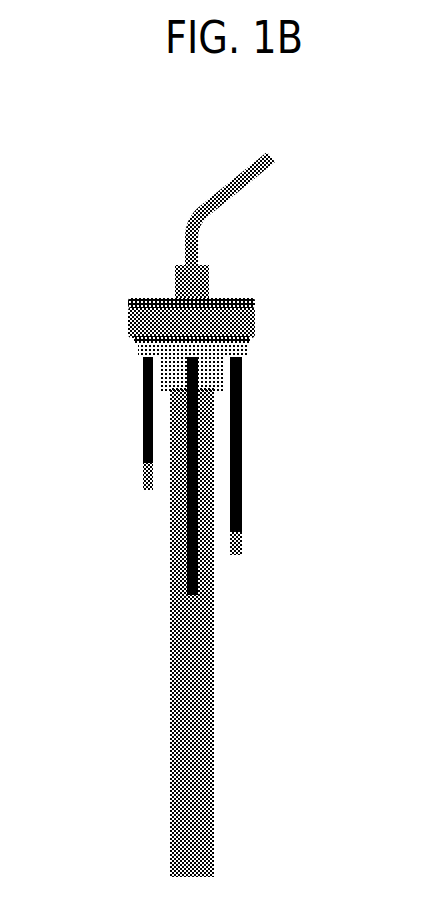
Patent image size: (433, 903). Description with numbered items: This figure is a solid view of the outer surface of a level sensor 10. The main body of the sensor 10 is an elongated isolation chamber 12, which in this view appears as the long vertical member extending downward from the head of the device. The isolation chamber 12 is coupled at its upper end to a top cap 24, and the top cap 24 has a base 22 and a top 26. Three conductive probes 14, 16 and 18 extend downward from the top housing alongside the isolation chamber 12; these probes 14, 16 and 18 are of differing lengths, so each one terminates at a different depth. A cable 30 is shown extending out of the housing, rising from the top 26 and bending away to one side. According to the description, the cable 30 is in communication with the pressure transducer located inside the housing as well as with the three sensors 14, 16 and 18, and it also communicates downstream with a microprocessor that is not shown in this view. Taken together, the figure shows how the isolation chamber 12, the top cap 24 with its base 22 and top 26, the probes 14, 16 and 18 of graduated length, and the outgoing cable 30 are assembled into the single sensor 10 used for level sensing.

The sensor 10 is at (205, 160).
The isolation chamber 12 is at (210, 697).
The conductive probe 14 is at (240, 387).
The conductive probe 16 is at (143, 455).
The conductive probe 18 is at (200, 525).
The base 22 is at (240, 325).
The top cap 24 is at (170, 365).
The top 26 is at (245, 302).
The cable 30 is at (252, 183).